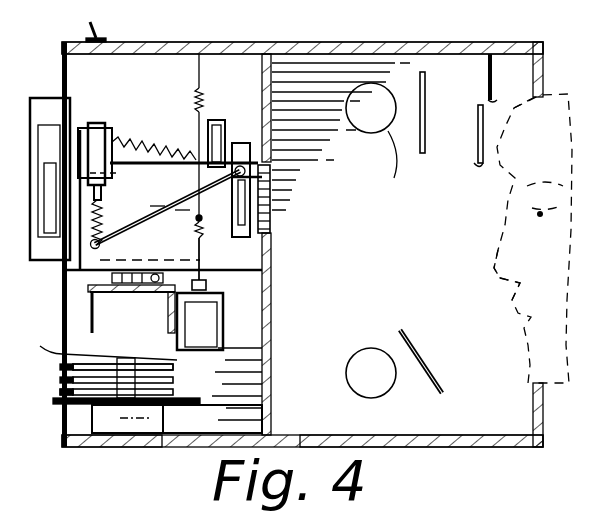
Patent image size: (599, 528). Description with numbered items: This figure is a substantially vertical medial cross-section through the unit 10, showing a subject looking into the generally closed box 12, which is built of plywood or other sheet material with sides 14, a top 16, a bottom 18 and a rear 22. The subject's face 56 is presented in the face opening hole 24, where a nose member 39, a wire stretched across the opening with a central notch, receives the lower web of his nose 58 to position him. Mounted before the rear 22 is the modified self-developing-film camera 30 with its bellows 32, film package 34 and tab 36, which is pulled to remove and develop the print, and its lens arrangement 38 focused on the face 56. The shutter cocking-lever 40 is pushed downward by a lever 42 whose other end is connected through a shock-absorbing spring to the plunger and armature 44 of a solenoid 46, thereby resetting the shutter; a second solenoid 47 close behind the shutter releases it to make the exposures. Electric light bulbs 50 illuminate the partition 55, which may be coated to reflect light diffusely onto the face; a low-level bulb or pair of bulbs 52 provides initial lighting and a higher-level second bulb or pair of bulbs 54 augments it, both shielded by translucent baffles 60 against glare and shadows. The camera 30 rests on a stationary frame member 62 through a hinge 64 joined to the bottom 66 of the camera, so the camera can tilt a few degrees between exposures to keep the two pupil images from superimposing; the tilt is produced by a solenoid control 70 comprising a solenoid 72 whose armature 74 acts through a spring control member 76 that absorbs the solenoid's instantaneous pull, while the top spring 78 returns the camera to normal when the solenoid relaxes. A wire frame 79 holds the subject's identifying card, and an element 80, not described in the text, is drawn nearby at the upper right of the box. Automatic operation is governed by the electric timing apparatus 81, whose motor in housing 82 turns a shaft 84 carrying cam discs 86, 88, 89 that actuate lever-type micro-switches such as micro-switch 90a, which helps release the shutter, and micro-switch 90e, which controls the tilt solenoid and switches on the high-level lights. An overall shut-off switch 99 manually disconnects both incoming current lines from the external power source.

The unit 10 is at (324, 44).
The box 12 is at (205, 450).
The sides 14 is at (390, 296).
The top 16 is at (243, 41).
The bottom 18 is at (430, 452).
The rear 22 is at (62, 81).
The face opening hole 24 is at (532, 388).
The camera 30 is at (144, 142).
The bellows 32 is at (118, 140).
The film package 34 is at (50, 179).
The tab 36 is at (50, 180).
The lens arrangement 38 is at (272, 207).
The nose member 39 is at (516, 286).
The shutter cocking-lever 40 is at (272, 189).
The lever 42 is at (100, 244).
The plunger and armature 44 is at (119, 172).
The solenoid 46 is at (96, 123).
The second solenoid 47 is at (222, 122).
The electric light bulbs 50 is at (352, 127).
The bulb or pair of bulbs 52 is at (374, 161).
The second bulb or pair of bulbs 54 is at (353, 393).
The partition 55 is at (272, 305).
The subject's face 56 is at (514, 178).
The nose 58 is at (502, 270).
The baffles 60 is at (427, 116).
The stationary frame member 62 is at (93, 325).
The hinge 64 is at (150, 294).
The bottom of the camera 66 is at (150, 270).
The solenoid control 70 is at (229, 341).
The solenoid 72 is at (206, 336).
The armature 74 is at (207, 286).
The spring control member 76 is at (201, 250).
The top spring 78 is at (203, 108).
The wire frame 79 is at (484, 92).
The hook 80 is at (478, 146).
The electric timing apparatus 81 is at (75, 447).
The housing 82 is at (127, 419).
The shaft 84 is at (102, 340).
The cam disc 86 is at (178, 414).
The cam disc 88 is at (173, 380).
The cam disc 89 is at (173, 367).
The micro-switch 90e is at (60, 392).
The micro-switch 90a is at (60, 393).
The overall shut-off switch 99 is at (101, 34).